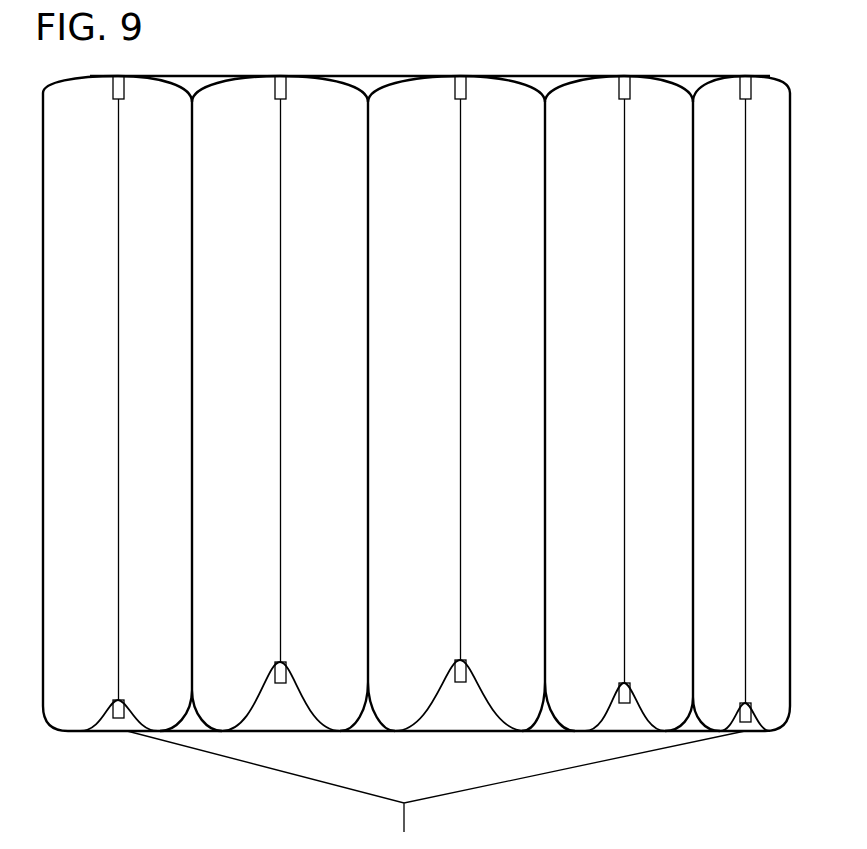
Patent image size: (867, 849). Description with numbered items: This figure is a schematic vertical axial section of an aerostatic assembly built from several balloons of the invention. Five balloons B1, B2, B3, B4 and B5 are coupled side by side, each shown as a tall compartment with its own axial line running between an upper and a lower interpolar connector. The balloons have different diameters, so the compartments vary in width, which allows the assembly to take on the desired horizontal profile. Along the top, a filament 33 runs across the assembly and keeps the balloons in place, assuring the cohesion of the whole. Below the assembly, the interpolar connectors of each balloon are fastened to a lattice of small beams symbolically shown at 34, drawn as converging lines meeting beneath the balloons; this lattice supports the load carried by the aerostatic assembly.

The filament 33 is at (572, 76).
The lattice of small beams 34 is at (502, 773).
The balloon B1 is at (127, 403).
The balloon B2 is at (281, 403).
The balloon B3 is at (460, 403).
The balloon B4 is at (631, 403).
The balloon B5 is at (753, 403).